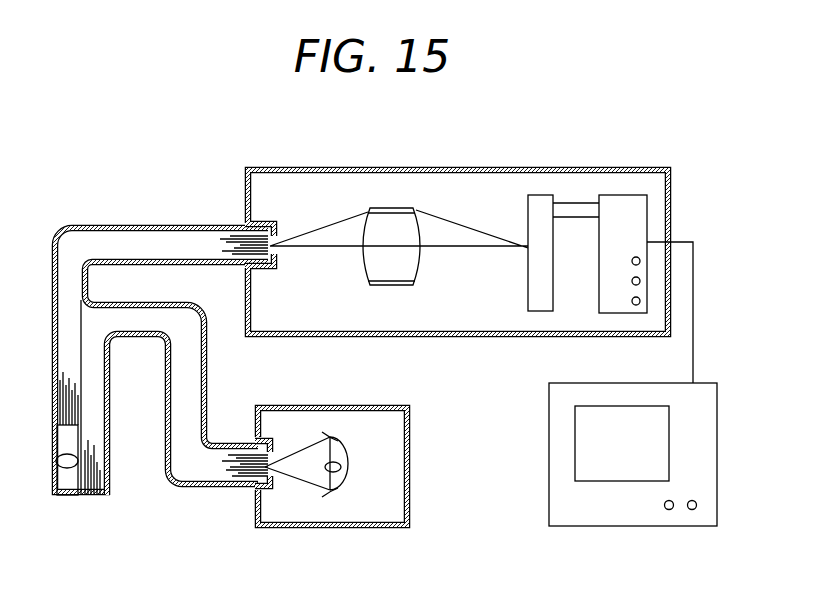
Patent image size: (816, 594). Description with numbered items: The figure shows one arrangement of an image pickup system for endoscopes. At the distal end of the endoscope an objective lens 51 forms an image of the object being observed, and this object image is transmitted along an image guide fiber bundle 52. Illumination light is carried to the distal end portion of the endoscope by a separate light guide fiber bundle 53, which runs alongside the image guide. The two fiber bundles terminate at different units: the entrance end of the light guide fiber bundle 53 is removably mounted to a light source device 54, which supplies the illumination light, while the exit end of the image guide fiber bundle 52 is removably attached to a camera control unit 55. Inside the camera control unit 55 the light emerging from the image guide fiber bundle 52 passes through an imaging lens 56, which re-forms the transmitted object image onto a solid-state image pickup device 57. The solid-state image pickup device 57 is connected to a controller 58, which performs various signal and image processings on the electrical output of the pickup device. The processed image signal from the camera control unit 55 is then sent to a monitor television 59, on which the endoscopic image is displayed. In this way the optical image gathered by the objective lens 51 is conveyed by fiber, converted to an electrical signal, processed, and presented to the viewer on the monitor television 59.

The objective lens 51 is at (67, 468).
The image guide fiber bundle 52 is at (140, 243).
The light guide fiber bundle 53 is at (92, 398).
The light source device 54 is at (346, 488).
The camera control unit 55 is at (446, 167).
The imaging lens 56 is at (392, 208).
The solid-state image pickup device 57 is at (541, 203).
The controller 58 is at (625, 205).
The monitor television 59 is at (557, 408).